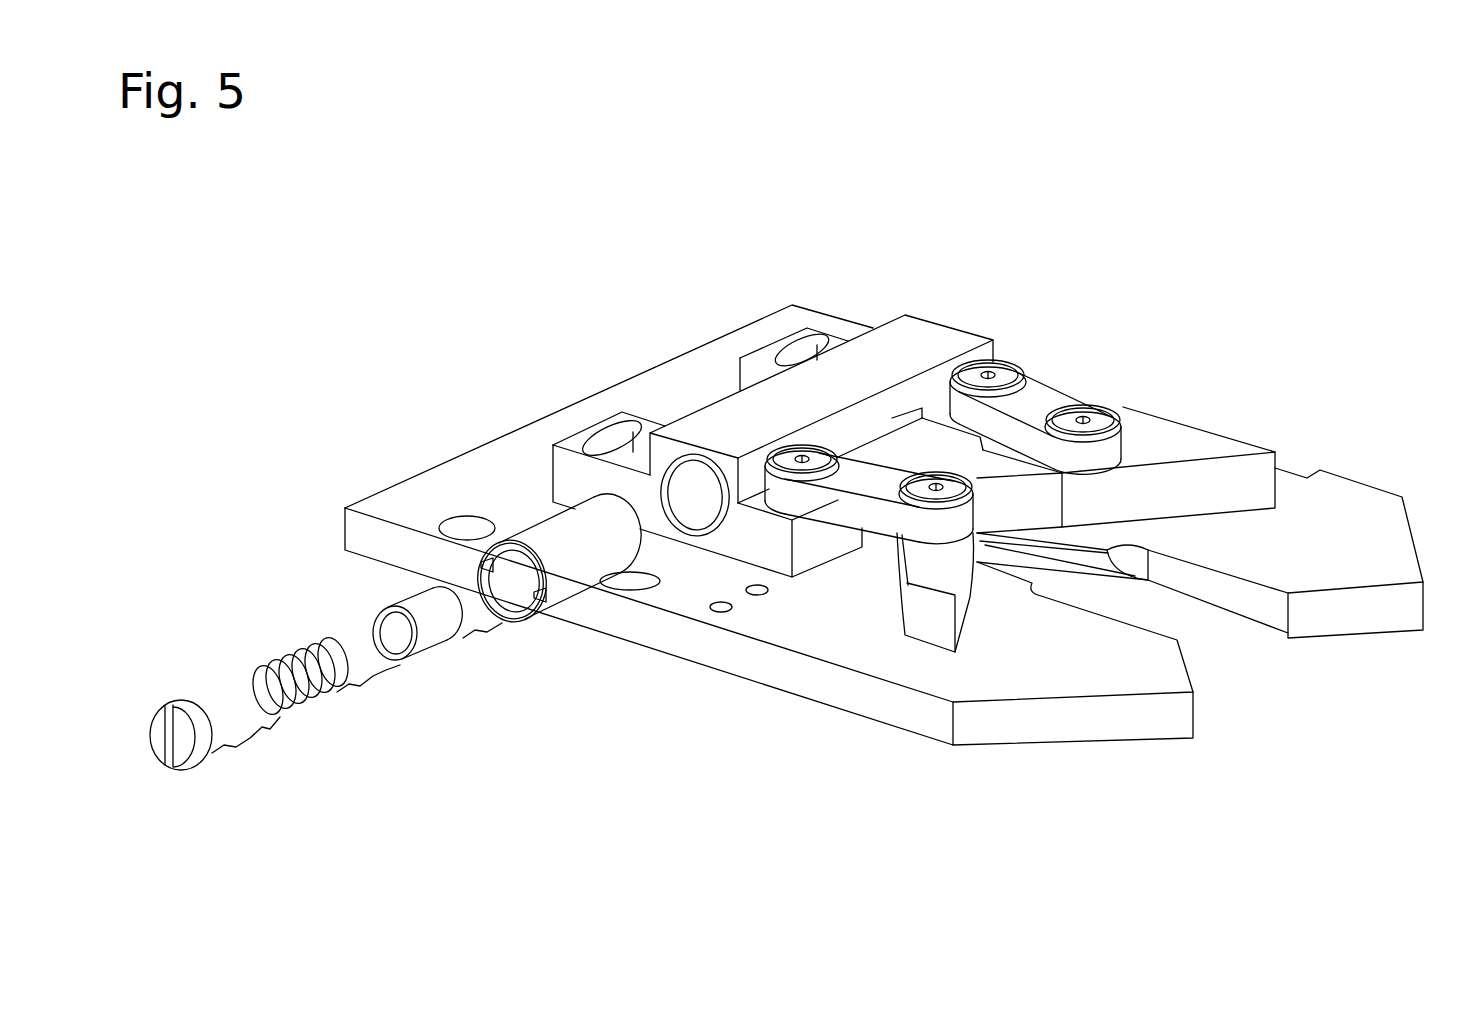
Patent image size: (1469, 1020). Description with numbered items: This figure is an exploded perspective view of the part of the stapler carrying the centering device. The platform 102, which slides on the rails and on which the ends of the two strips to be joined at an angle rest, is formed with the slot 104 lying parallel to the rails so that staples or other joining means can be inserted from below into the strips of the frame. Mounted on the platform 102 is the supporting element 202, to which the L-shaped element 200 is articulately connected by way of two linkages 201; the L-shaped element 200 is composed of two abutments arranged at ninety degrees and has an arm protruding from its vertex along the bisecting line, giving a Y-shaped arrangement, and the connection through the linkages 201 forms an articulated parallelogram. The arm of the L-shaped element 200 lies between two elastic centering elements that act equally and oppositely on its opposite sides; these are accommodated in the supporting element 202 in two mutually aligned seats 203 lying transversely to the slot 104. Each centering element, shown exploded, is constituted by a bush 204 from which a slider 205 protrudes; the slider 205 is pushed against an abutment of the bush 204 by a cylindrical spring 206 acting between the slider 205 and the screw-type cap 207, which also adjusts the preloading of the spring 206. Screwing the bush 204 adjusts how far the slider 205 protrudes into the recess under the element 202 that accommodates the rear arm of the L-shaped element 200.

The platform 102 is at (1358, 513).
The slot 104 is at (1158, 617).
The L-shaped element 200 is at (1173, 450).
The linkages 201 is at (868, 483).
The supporting element 202 is at (935, 340).
The seats 203 is at (707, 491).
The bush 204 is at (518, 622).
The slider 205 is at (428, 653).
The cylindrical spring 206 is at (310, 700).
The screw-type cap 207 is at (197, 762).